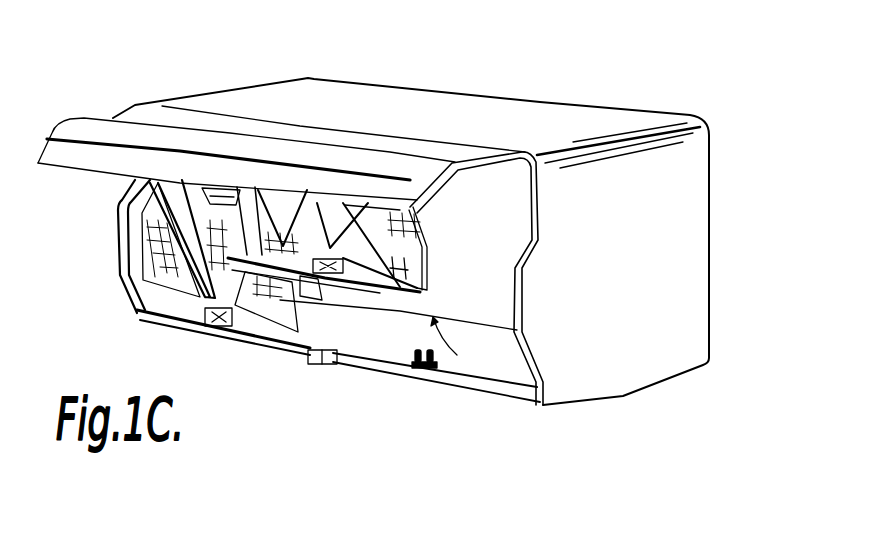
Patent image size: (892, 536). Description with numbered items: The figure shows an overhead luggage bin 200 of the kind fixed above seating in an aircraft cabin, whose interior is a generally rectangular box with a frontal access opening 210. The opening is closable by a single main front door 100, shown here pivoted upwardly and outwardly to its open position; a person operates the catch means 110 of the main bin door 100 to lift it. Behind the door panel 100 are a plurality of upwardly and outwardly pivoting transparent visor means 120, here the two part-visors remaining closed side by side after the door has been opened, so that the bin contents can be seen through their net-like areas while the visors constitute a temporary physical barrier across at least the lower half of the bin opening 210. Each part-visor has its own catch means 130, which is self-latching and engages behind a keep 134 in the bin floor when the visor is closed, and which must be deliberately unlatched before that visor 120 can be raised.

The main front door 100 is at (73, 128).
The catch means 110 is at (333, 366).
The transparent visor means 120 is at (117, 228).
The catch means 130 is at (202, 326).
The keep 134 is at (429, 368).
The luggage bin 200 is at (724, 321).
The frontal access opening 210 is at (518, 190).